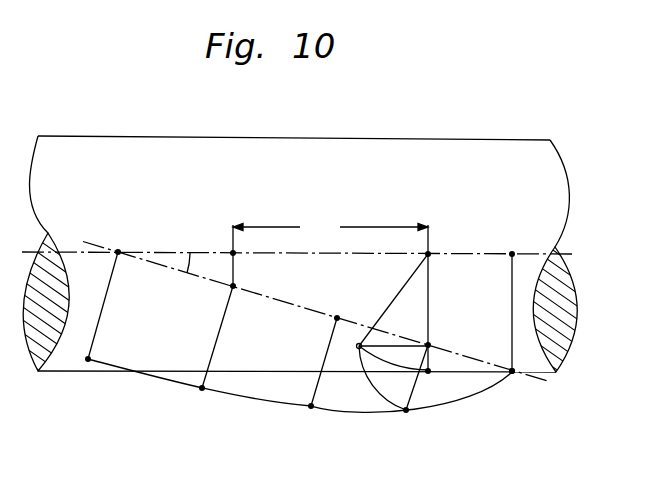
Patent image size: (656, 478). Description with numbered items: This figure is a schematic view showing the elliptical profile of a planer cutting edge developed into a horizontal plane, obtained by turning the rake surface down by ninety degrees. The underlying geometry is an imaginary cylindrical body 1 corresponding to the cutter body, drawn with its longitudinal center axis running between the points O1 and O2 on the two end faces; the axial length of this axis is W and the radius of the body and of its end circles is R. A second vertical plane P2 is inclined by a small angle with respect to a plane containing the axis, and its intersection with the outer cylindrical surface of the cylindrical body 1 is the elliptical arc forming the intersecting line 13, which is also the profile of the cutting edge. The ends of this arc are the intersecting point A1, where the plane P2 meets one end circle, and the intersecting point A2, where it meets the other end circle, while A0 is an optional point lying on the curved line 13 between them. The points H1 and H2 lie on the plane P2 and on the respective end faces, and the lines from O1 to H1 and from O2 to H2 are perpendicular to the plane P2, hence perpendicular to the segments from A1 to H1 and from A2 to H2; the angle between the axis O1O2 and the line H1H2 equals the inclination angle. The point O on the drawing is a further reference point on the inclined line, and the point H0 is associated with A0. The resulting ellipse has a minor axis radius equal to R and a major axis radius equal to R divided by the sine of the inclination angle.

The imaginary cylindrical body 1 is at (557, 163).
The intersecting line 13 is at (352, 412).
The reference point O on axis O is at (103, 295).
The end of longitudinal center axis O1 is at (222, 255).
The end of longitudinal center axis O2 is at (441, 299).
The axial length W is at (330, 227).
The radius of the cylindrical body R is at (436, 312).
The point H1 is at (228, 335).
The point H0 on inclined axis H0 is at (320, 360).
The point H2 is at (409, 371).
The intersecting point A1 is at (202, 403).
The optional point A0 is at (309, 422).
The intersecting point A2 is at (415, 424).
The second vertical plane P2 is at (522, 377).